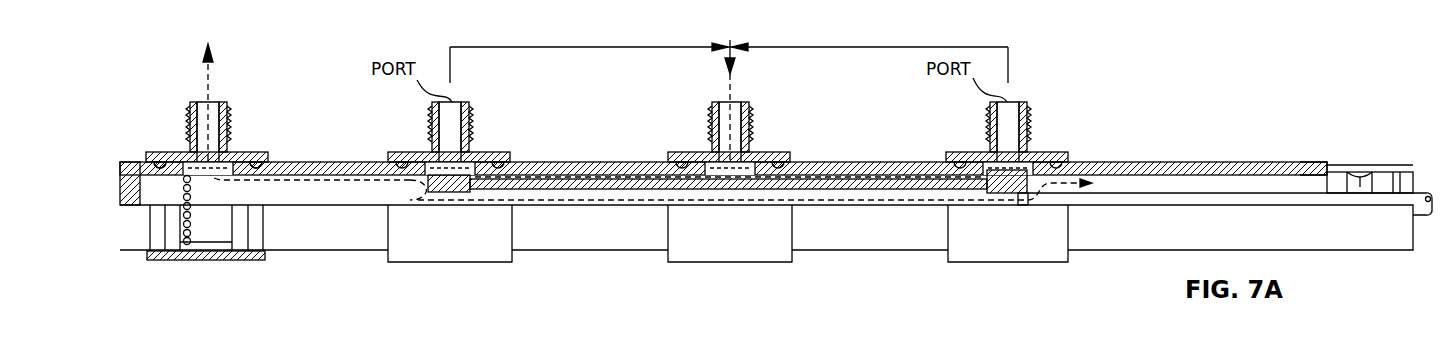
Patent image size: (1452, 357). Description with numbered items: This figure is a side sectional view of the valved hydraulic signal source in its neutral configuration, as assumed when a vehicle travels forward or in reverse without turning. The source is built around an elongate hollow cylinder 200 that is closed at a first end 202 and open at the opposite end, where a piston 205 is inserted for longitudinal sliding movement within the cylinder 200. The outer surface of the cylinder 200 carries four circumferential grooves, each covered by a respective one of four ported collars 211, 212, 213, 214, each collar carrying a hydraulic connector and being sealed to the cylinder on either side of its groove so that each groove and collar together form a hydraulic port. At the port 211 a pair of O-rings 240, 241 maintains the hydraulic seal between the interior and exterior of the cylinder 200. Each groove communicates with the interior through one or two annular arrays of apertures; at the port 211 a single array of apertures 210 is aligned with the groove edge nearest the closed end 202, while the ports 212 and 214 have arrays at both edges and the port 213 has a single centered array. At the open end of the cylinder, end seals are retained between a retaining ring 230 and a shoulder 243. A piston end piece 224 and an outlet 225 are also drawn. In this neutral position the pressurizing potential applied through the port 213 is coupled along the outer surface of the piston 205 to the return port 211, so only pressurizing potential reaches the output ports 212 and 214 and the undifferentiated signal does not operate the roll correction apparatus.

The hollow cylinder 200 is at (1173, 162).
The first end 202 is at (120, 180).
The piston 205 is at (860, 190).
The apertures 210 is at (190, 236).
The ported collar 211 is at (243, 150).
The ported collar 212 is at (490, 152).
The ported collar 213 is at (768, 152).
The ported collar 214 is at (1050, 152).
The spool end plate 224 is at (1028, 206).
The outlet tube 225 is at (1427, 216).
The retaining ring 230 is at (1415, 168).
The O-ring 240 is at (162, 152).
The O-ring 241 is at (262, 152).
The shoulder 243 is at (1318, 162).